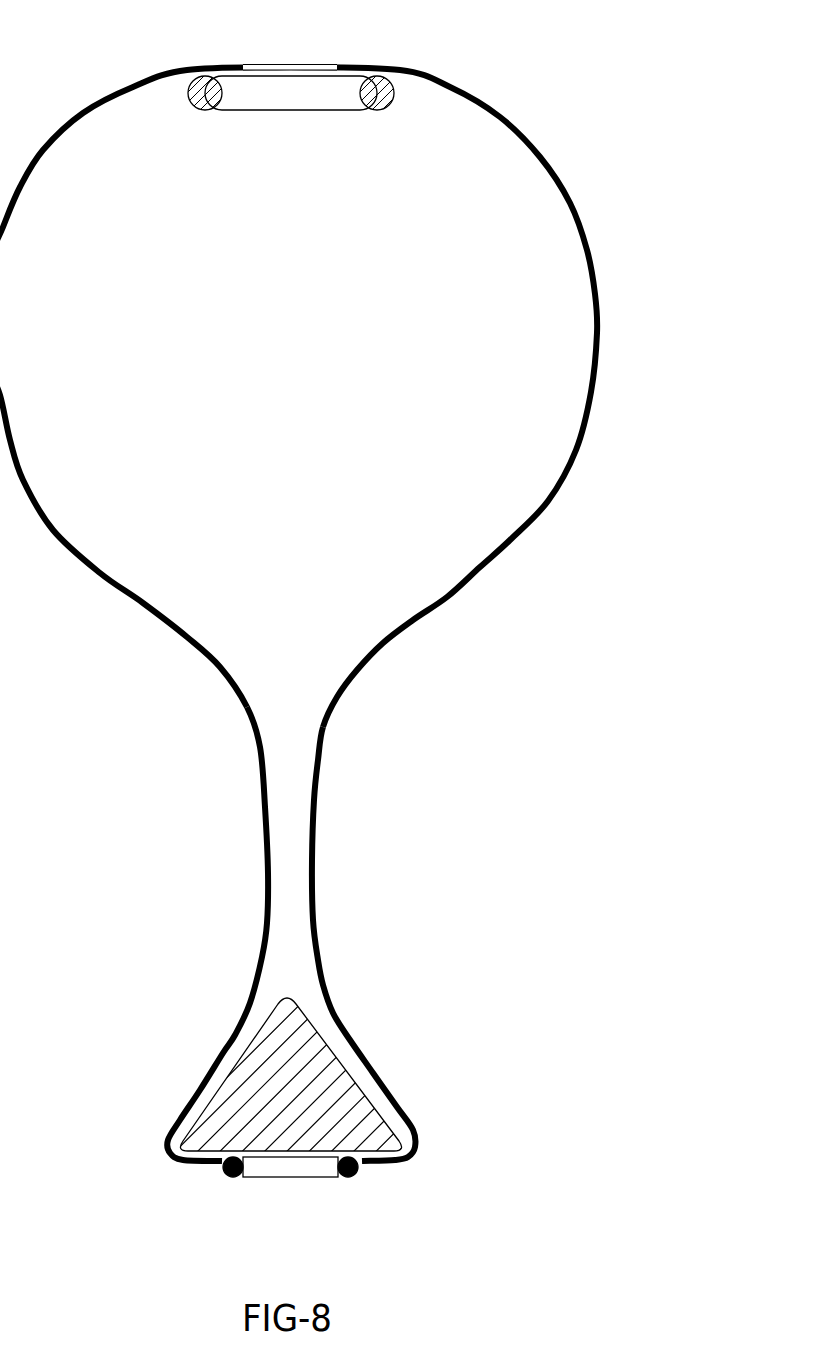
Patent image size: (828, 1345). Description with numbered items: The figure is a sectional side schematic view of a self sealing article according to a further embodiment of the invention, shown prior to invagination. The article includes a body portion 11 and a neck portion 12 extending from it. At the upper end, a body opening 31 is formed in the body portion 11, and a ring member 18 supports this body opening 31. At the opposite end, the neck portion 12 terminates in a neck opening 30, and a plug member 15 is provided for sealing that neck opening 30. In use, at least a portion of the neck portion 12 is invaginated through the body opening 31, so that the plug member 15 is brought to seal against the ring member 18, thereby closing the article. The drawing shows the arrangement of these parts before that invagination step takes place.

The body portion 11 is at (658, 714).
The neck portion 12 is at (687, 714).
The plug member 15 is at (233, 1080).
The ring member 18 is at (187, 92).
The neck opening 30 is at (340, 1180).
The body opening 31 is at (243, 61).